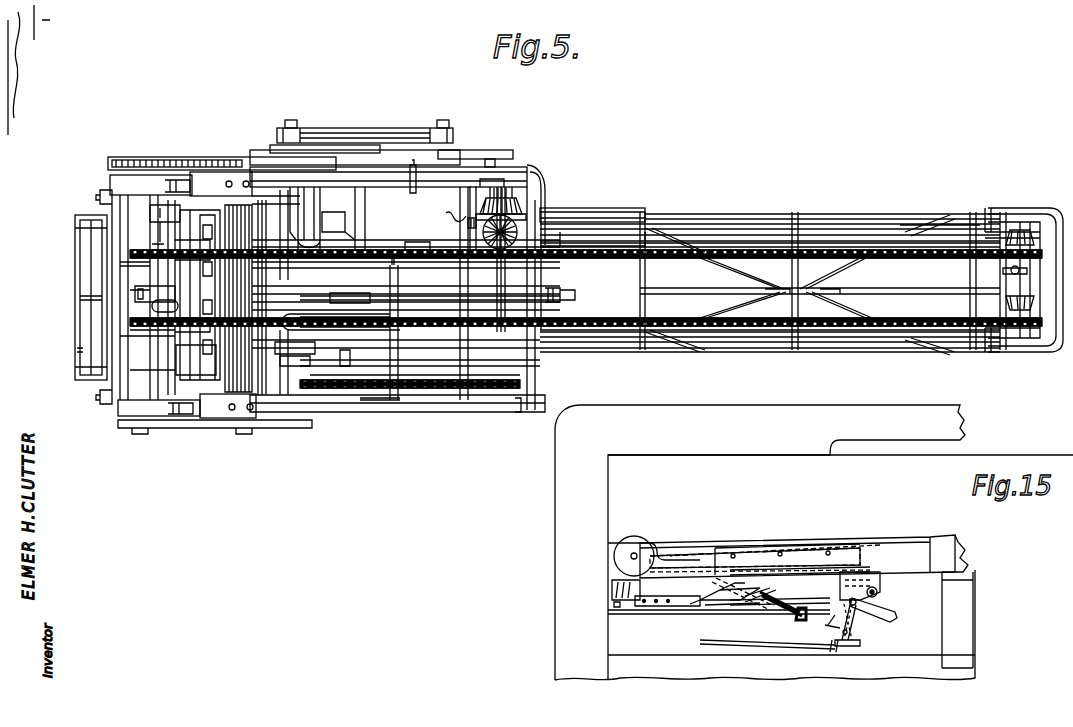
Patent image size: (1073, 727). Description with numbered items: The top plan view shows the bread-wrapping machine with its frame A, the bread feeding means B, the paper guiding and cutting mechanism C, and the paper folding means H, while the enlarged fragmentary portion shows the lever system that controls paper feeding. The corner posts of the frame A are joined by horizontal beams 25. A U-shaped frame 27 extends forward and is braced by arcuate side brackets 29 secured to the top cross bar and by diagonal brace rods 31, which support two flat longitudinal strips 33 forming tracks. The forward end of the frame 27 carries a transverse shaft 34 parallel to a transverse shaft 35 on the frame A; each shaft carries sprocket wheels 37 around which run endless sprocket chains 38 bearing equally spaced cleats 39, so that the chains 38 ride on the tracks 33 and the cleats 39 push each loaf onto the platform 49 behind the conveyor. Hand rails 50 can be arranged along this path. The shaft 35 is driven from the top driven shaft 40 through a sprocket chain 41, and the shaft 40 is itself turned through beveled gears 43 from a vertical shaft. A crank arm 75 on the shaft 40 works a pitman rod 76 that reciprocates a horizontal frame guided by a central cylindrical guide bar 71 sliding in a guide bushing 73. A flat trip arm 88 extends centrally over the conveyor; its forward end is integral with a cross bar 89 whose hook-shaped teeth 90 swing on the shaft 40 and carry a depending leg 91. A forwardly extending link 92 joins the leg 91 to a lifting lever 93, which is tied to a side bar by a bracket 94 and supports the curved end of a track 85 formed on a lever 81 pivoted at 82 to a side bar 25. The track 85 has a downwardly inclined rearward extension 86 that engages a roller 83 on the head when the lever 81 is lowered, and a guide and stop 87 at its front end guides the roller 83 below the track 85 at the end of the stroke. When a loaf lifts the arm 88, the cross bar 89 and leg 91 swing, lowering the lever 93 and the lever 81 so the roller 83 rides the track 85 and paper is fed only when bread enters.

In FIG. 5, the means for folding the paper about the bread H is at (152, 250).
In FIG. 5, the paper guiding and cutting mechanism C is at (232, 182).
In FIG. 5, the frame A is at (512, 165).
In FIG. 5, the means for feeding the loaves of bread B is at (822, 330).
In FIG. 5, the pitman rod 76 is at (348, 150).
In FIG. 5, the crank arm 75 is at (478, 152).
In FIG. 5, the beveled gears 43 is at (522, 196).
In FIG. 5, the hook-shaped teeth 90 is at (518, 218).
In FIG. 5, the top driven shaft 40 is at (540, 246).
In FIG. 5, the arcuate side brackets 29 is at (628, 212).
In FIG. 5, the U-shaped forwardly extending frame 27 is at (707, 226).
In FIG. 5, the flights or cleats 39 is at (740, 245).
In FIG. 5, the longitudinally extending strips 33 is at (810, 244).
In FIG. 5, the hand rails 50 is at (910, 232).
In FIG. 5, the sprocket wheels 37 is at (290, 318).
In FIG. 5, the transverse shaft 35 is at (322, 203).
In FIG. 5, the platform 49 is at (298, 258).
In FIG. 5, the cross bar 89 is at (445, 209).
In FIG. 5, the flat trip arm 88 is at (417, 234).
In FIG. 15, the flat trip arm 88 is at (784, 610).
In FIG. 5, the centrally disposed forwardly extending cylindrical guide bar 71 is at (437, 300).
In FIG. 5, the guide bushing 73 is at (568, 290).
In FIG. 5, the diagonally extending brace rods 31 is at (765, 270).
In FIG. 5, the transverse shaft 34 is at (1003, 270).
In FIG. 5, the endless sprocket chains 38 is at (1040, 296).
In FIG. 5, the sprocket chain 41 is at (410, 395).
In FIG. 15, the lever 81 is at (675, 555).
In FIG. 15, the pivot 82 is at (634, 556).
In FIG. 15, the roller 83 is at (880, 592).
In FIG. 15, the track 85 is at (748, 612).
In FIG. 15, the rearwardly extending downwardly inclined extension 86 is at (797, 556).
In FIG. 15, the guide and stop 87 is at (700, 600).
In FIG. 15, the depending leg 91 is at (612, 590).
In FIG. 15, the forwardly extending link 92 is at (645, 606).
In FIG. 15, the lifting lever 93 is at (883, 614).
In FIG. 15, the bracket 94 is at (851, 628).
In FIG. 15, the horizontally extending beams 25 is at (958, 556).